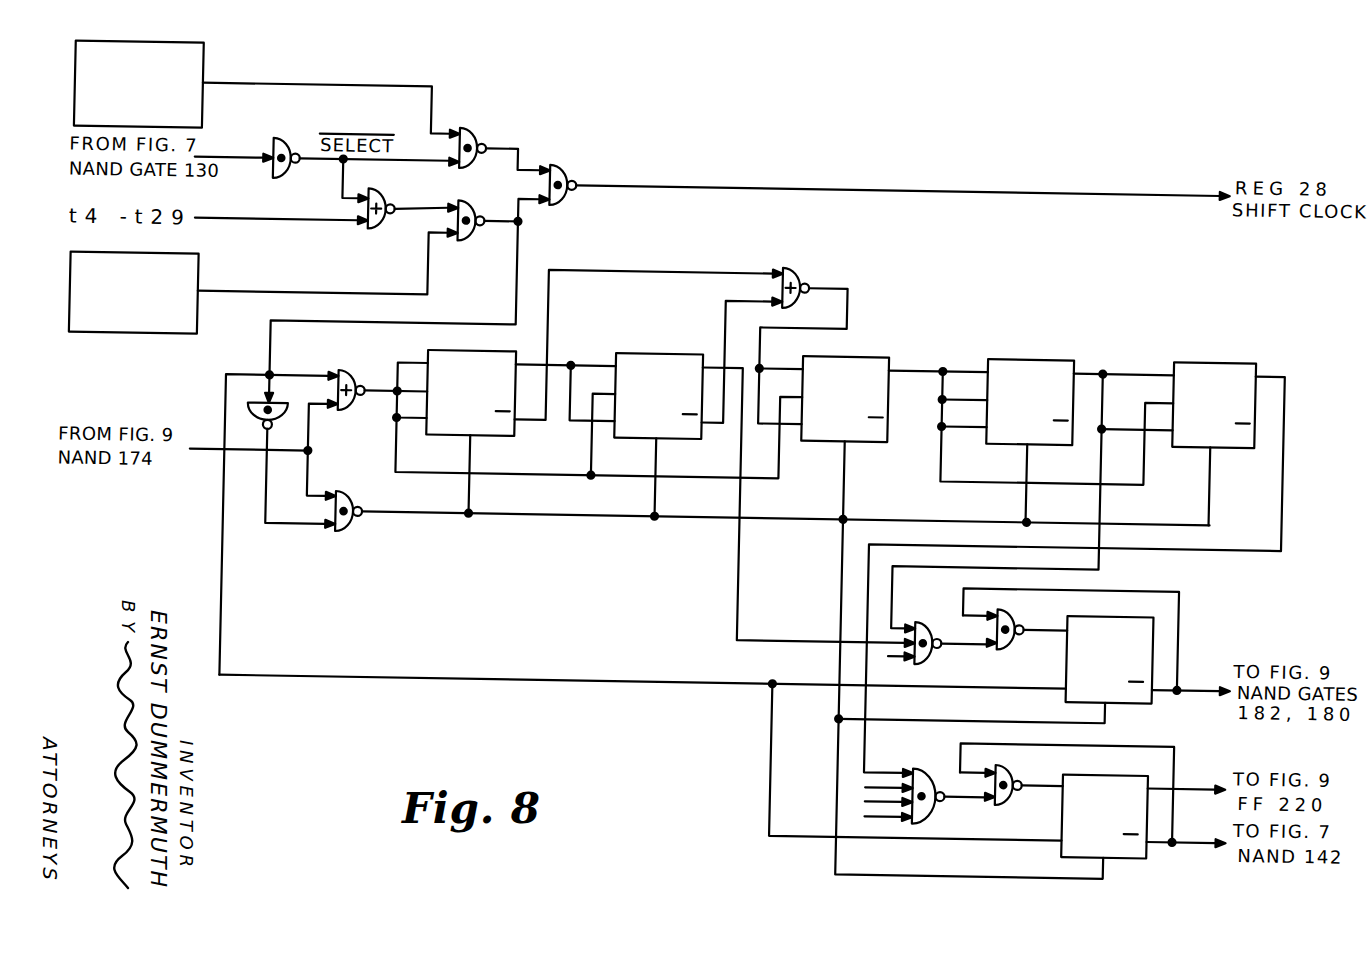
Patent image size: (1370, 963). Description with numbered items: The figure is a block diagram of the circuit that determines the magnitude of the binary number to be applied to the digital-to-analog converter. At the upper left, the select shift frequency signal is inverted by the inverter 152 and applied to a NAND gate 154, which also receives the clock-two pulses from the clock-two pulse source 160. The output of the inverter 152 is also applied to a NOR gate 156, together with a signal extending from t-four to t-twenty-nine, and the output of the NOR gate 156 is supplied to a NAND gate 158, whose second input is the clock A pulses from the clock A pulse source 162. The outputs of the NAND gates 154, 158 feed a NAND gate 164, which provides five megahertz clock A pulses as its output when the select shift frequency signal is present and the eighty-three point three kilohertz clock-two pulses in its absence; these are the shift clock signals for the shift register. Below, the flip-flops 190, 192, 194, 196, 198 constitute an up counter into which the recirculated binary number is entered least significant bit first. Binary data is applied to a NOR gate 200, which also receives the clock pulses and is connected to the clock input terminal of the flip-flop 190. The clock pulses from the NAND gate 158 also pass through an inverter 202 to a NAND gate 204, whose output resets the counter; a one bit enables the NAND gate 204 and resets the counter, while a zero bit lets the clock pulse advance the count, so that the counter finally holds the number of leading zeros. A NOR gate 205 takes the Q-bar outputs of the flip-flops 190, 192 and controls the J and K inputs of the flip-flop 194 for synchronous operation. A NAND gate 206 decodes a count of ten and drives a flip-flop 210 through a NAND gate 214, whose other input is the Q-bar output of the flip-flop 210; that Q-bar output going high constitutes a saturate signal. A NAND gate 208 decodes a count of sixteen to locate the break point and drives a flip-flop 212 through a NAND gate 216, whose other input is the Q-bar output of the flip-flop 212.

The clock 2 pulse source 160 is at (196, 64).
The clock A pulse source 162 is at (195, 272).
The inverter 152 is at (284, 132).
The NAND gate 154 is at (462, 133).
The NOR gate 156 is at (372, 195).
The NAND gate 158 is at (462, 205).
The NAND gate 164 is at (558, 168).
The flip-flop 190 is at (466, 354).
The flip-flop 192 is at (649, 354).
The flip-flop 194 is at (844, 354).
The flip-flop 196 is at (1030, 354).
The flip-flop 198 is at (1217, 354).
The NOR gate 200 is at (345, 376).
The inverter 202 is at (258, 420).
The NAND gate 204 is at (349, 497).
The NOR gate 205 is at (787, 267).
The NAND gate 206 is at (934, 607).
The NAND gate 208 is at (939, 750).
The flip-flop 210 is at (1114, 610).
The flip-flop 212 is at (1115, 767).
The NAND gate 214 is at (1019, 606).
The NAND gate 216 is at (1018, 765).